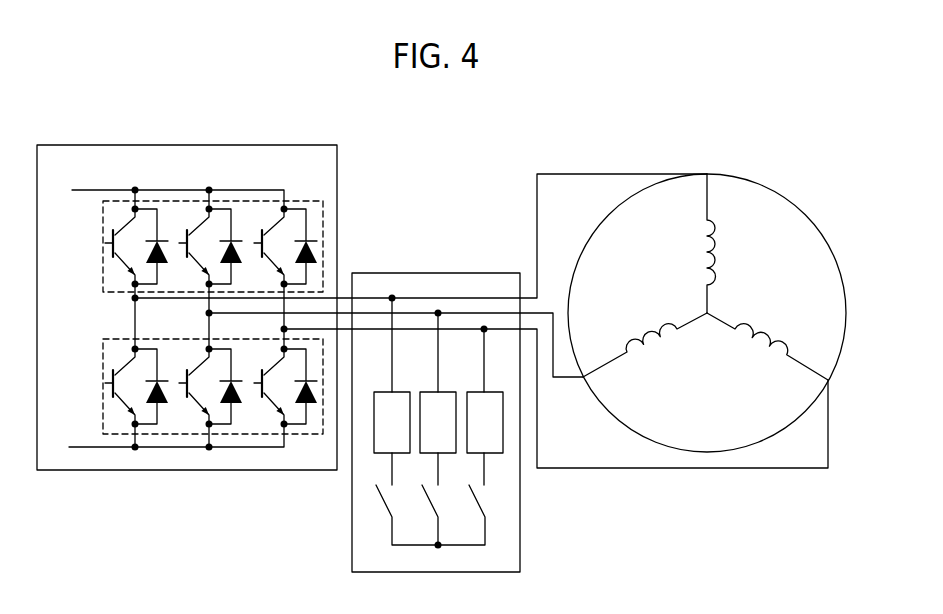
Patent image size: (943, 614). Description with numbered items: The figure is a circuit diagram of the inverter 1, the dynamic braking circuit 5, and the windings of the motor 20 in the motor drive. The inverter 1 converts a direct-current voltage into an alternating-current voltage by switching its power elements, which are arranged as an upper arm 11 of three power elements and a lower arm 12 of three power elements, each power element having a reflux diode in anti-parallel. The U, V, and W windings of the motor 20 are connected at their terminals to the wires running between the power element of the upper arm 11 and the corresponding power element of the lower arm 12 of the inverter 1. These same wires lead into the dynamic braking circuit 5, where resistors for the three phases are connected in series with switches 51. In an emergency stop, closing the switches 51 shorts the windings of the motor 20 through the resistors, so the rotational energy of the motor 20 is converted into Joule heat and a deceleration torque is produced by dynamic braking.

The inverter 1 is at (432, 307).
The upper arm 11 is at (103, 226).
The lower arm 12 is at (103, 366).
The dynamic braking circuit 5 is at (457, 399).
The switches 51 is at (488, 500).
The motor 20 is at (778, 192).